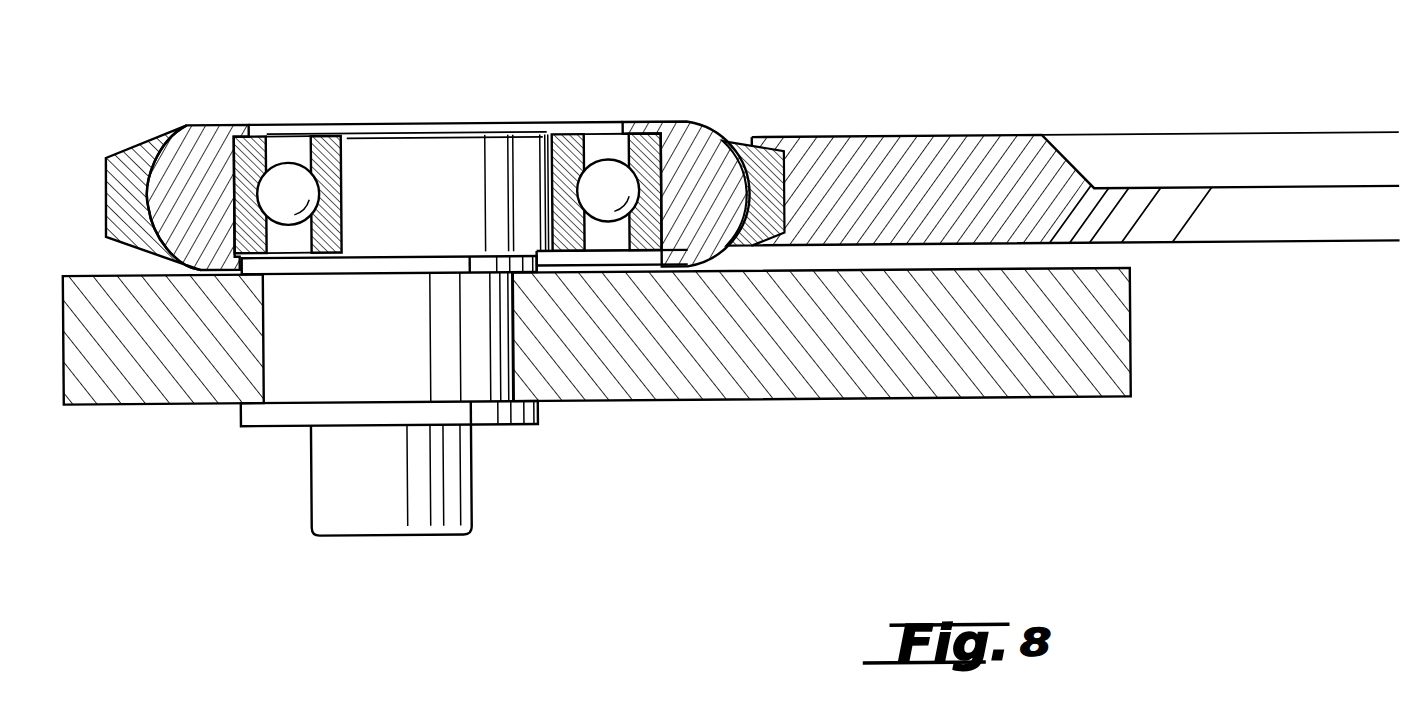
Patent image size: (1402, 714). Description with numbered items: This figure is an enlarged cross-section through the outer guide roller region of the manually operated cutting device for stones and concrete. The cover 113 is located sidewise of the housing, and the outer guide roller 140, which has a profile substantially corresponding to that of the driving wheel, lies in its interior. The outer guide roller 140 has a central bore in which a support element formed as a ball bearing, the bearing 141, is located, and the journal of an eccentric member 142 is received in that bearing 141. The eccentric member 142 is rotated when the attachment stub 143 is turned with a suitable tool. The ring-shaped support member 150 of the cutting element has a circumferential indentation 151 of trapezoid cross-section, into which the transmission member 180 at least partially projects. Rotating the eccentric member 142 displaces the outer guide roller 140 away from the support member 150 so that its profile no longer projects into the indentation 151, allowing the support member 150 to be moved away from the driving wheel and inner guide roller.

The cover 113 is at (931, 386).
The outer guide roller 140 is at (701, 126).
The bearing 141 is at (574, 135).
The eccentric member 142 is at (410, 130).
The attachment stub 143 is at (355, 520).
The support member 150 is at (1024, 156).
The circumferential indentation 151 is at (758, 146).
The transmission member 180 is at (129, 148).